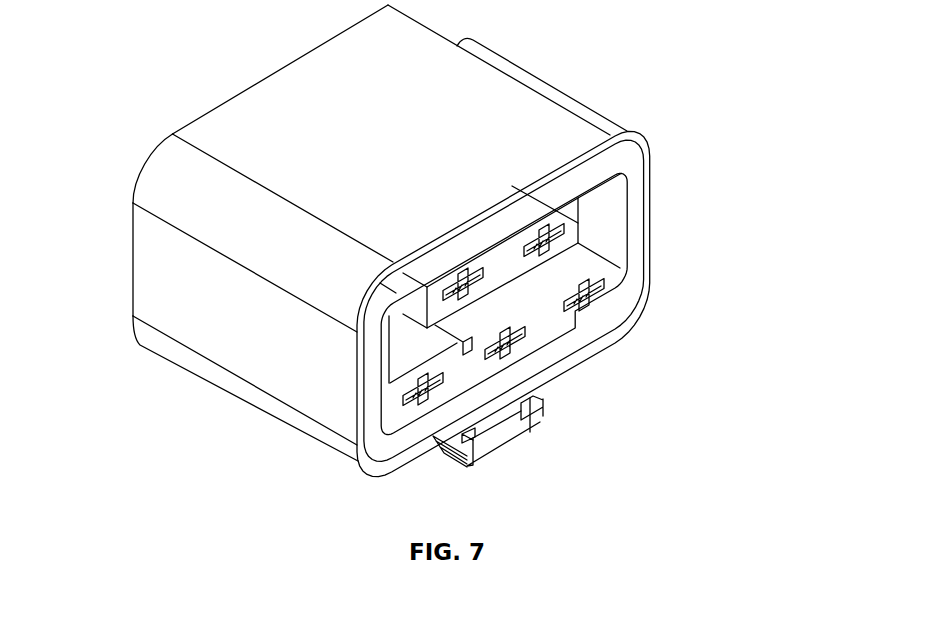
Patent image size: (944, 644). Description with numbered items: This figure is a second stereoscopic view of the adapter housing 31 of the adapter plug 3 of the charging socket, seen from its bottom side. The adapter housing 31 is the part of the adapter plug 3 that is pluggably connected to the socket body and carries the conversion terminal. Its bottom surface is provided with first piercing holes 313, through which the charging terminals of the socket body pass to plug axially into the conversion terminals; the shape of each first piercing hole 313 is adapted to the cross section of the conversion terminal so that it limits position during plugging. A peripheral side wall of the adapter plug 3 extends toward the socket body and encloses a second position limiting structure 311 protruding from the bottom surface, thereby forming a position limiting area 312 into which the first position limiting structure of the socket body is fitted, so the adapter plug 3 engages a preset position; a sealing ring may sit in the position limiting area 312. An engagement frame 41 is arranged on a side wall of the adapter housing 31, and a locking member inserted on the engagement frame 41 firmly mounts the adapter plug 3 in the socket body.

The adapter plug 3 is at (450, 241).
The adapter housing 31 is at (268, 107).
The position limiting area 312 is at (632, 177).
The second position limiting structure 311 is at (608, 270).
The first piercing hole 313 is at (525, 336).
The engagement frame 41 is at (497, 432).